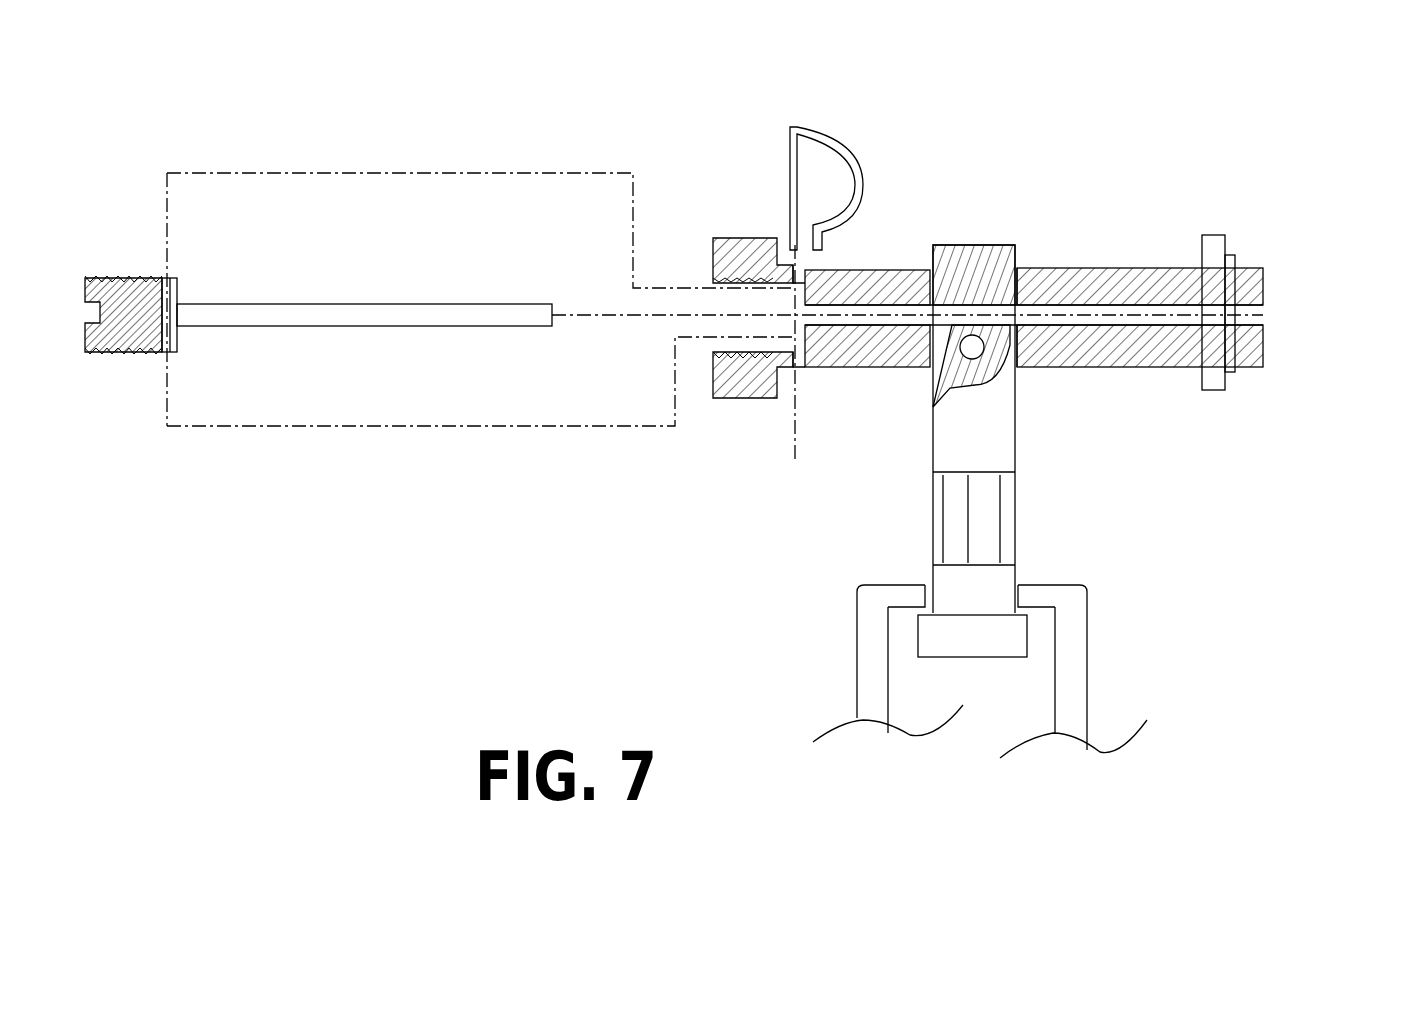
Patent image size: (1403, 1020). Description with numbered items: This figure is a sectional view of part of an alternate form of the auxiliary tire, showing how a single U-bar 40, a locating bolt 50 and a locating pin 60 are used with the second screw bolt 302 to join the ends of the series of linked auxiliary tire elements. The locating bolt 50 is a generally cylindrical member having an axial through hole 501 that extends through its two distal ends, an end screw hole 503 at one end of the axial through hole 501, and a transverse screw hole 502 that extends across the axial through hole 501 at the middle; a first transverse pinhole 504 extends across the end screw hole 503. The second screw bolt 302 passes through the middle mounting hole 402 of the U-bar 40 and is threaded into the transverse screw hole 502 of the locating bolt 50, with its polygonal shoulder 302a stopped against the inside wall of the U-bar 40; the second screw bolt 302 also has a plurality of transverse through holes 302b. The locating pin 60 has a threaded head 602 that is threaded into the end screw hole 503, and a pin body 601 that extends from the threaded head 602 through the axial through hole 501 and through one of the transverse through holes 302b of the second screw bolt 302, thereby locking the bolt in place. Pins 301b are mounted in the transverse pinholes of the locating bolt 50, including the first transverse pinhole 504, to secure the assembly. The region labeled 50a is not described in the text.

The locating pin 60 is at (195, 263).
The pin body 601 is at (403, 312).
The threaded head 602 is at (168, 332).
The locating bolt 50 is at (872, 275).
The axial bore 50a is at (750, 313).
The axial through hole 501 is at (1060, 322).
The transverse screw hole 502 is at (1018, 287).
The end screw hole 503 is at (762, 350).
The first transverse pinhole 504 is at (790, 363).
The pin 301b is at (858, 192).
The second screw bolt 302 is at (982, 430).
The polygonal shoulder 302a is at (1003, 512).
The transverse through hole 302b is at (968, 312).
The U-bar 40 is at (1073, 653).
The middle mounting hole 402 is at (930, 590).